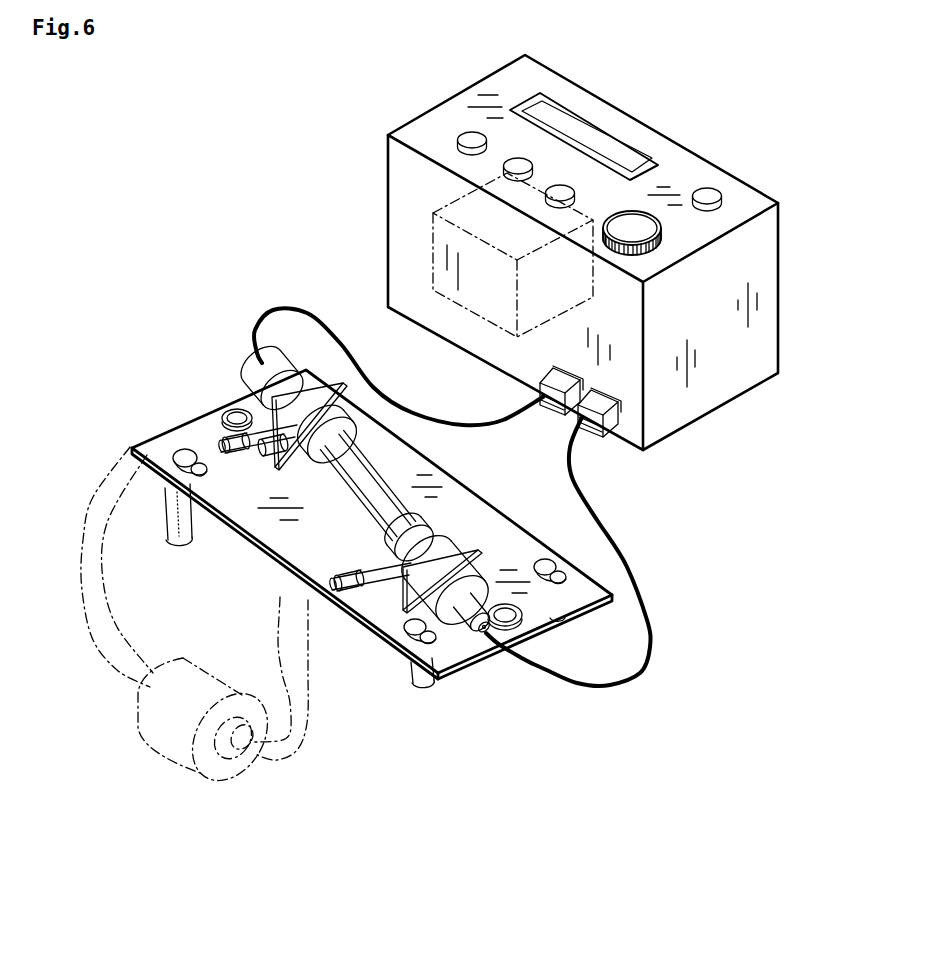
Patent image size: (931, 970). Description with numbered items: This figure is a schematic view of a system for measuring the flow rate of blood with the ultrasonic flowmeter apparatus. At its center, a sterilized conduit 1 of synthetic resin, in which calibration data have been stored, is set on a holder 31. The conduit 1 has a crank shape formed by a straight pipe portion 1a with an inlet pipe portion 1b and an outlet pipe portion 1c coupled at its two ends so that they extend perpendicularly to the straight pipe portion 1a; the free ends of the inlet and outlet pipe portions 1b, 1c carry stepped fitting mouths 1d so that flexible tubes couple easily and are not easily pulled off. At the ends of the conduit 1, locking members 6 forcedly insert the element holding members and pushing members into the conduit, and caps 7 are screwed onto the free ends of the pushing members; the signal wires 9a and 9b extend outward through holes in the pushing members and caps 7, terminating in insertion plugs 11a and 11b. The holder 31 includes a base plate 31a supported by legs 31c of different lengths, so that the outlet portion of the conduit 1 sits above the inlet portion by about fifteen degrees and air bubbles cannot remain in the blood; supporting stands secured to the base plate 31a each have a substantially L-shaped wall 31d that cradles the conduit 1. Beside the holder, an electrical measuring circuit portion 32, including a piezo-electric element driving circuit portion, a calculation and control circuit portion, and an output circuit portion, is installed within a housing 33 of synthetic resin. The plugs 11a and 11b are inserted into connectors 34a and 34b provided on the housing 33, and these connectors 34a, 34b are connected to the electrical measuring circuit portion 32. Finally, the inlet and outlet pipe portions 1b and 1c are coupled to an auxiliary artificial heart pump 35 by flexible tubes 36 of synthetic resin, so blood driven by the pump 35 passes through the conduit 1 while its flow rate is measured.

The conduit 1 is at (341, 497).
The straight pipe portion 1a is at (397, 510).
The inlet pipe portion 1b is at (387, 582).
The outlet pipe portion 1c is at (268, 437).
The fitting mouths 1d is at (240, 448).
The locking members 6 is at (293, 372).
The caps 7 is at (262, 368).
The signal wires 9a is at (653, 660).
The signal wires 9b is at (274, 305).
The insertion plug 11a is at (603, 420).
The insertion plug 11b is at (535, 373).
The holder 31 is at (163, 433).
The base plate 31a is at (287, 547).
The legs 31c is at (183, 535).
The wall 31d is at (342, 397).
The electrical measuring circuit portion 32 is at (430, 237).
The housing 33 is at (648, 133).
The connector 34a is at (615, 412).
The connector 34b is at (562, 363).
The auxiliary artificial heart pump 35 is at (172, 742).
The flexible tubes 36 is at (107, 665).